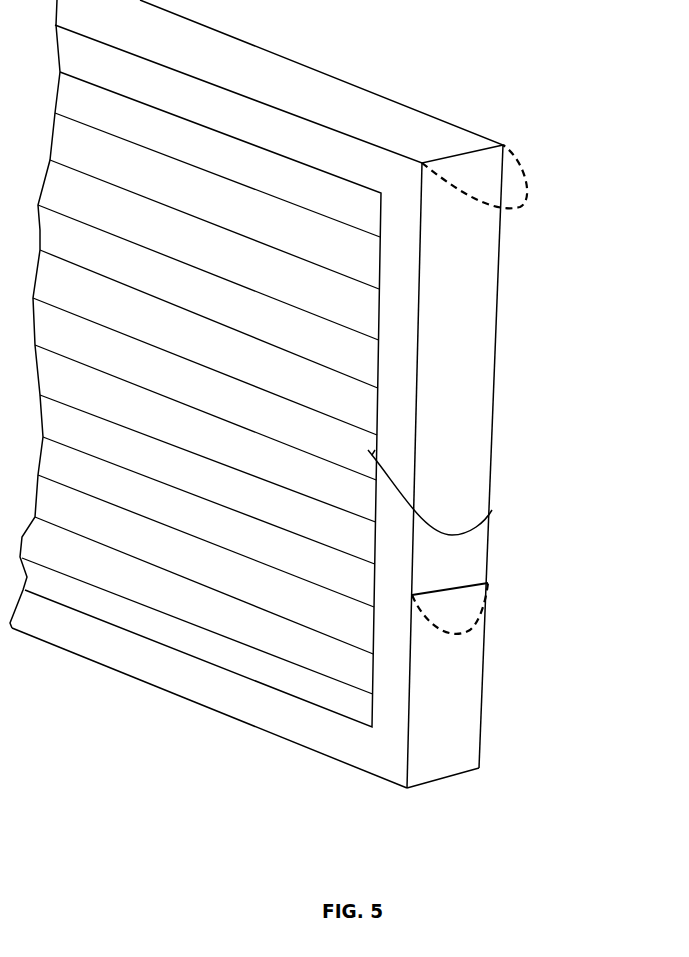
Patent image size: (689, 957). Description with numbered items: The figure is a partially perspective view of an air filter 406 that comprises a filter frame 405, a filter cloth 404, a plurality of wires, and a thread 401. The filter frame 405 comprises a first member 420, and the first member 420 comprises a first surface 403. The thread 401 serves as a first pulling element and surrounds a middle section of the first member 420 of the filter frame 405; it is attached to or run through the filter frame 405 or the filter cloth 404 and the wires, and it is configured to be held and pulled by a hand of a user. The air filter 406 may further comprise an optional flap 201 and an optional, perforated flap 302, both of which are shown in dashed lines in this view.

The air filter 406 is at (395, 74).
The flap 201 is at (515, 192).
The thread 401 is at (465, 540).
The perforated flap 302 is at (457, 615).
The first member 420 is at (465, 668).
The first surface 403 is at (448, 745).
The filter cloth 404 is at (97, 603).
The filter frame 405 is at (185, 683).